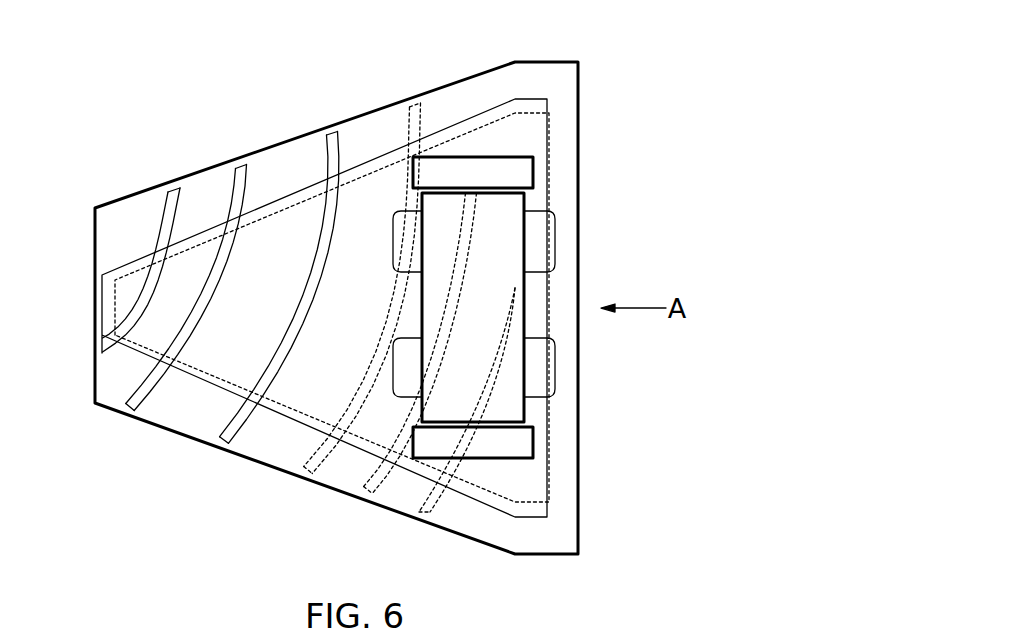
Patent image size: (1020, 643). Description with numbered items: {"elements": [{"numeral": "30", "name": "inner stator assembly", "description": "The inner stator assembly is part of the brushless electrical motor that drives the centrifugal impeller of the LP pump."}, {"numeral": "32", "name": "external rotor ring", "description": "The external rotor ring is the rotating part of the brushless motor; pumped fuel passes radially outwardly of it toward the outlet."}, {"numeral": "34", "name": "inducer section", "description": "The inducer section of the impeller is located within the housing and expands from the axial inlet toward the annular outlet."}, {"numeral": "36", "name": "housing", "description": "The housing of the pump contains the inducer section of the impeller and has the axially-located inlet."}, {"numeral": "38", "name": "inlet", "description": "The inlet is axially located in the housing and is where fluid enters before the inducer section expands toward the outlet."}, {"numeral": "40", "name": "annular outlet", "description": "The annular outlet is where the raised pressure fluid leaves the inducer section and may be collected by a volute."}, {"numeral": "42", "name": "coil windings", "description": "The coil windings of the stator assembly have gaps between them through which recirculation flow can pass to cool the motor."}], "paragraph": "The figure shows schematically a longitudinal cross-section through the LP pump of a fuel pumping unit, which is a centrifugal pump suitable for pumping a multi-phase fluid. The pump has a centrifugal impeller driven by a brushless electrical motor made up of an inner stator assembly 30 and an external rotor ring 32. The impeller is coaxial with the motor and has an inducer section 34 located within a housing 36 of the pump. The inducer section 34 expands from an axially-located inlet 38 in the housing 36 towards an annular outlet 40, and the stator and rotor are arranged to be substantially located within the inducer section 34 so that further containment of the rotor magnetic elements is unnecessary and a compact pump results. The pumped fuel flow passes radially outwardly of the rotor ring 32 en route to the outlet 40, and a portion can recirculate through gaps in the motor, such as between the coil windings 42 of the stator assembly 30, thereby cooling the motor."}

The hub / central housing 30 is at (475, 187).
The upper bracket 32 is at (430, 175).
The straps 34 is at (242, 173).
The lower bracket 36 is at (485, 548).
The panel 38 is at (108, 240).
The outer frame 40 is at (568, 90).
The retaining clips 42 is at (405, 380).